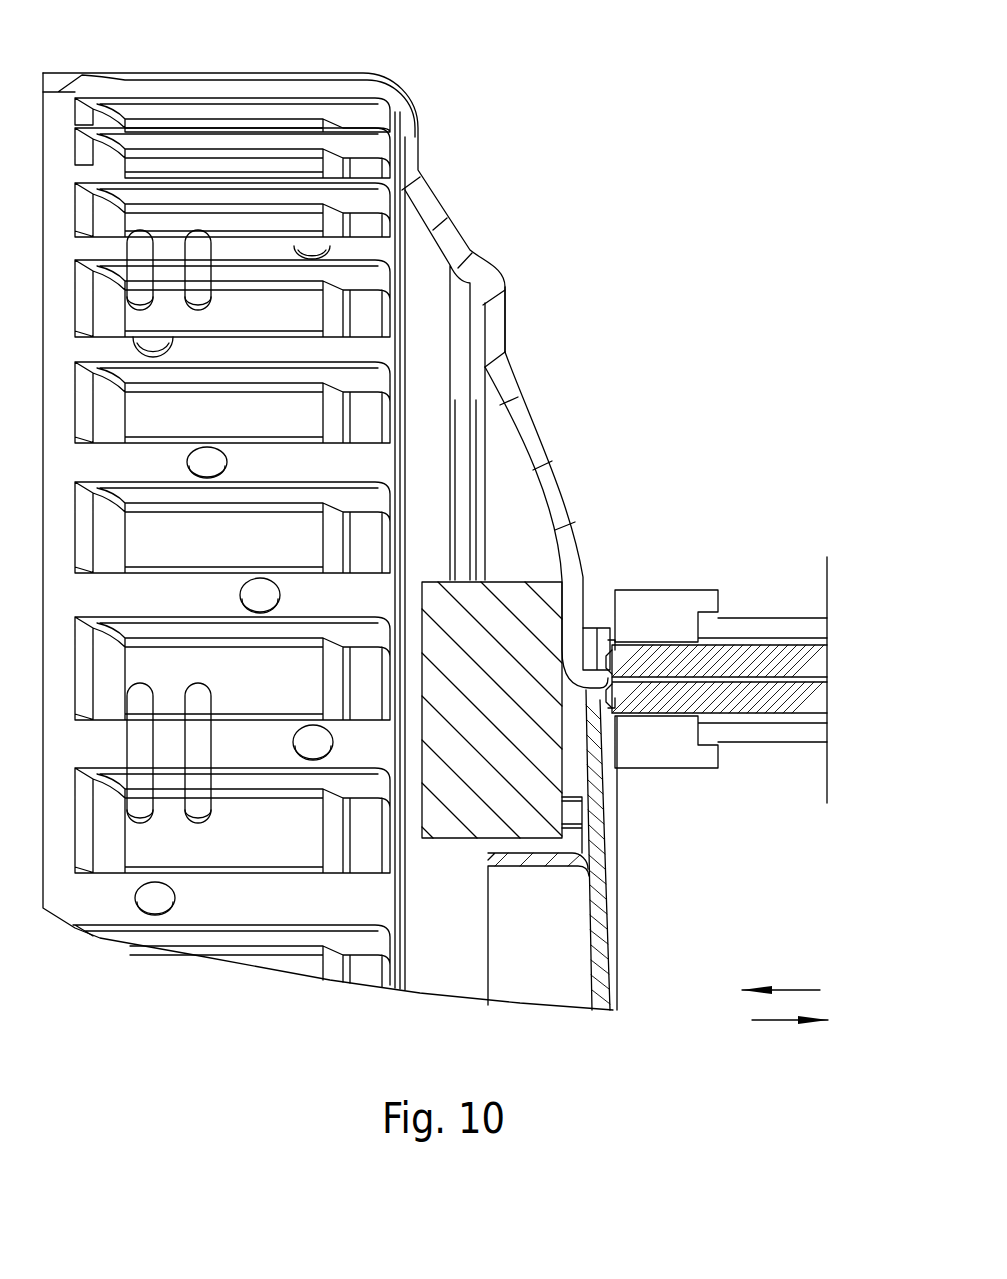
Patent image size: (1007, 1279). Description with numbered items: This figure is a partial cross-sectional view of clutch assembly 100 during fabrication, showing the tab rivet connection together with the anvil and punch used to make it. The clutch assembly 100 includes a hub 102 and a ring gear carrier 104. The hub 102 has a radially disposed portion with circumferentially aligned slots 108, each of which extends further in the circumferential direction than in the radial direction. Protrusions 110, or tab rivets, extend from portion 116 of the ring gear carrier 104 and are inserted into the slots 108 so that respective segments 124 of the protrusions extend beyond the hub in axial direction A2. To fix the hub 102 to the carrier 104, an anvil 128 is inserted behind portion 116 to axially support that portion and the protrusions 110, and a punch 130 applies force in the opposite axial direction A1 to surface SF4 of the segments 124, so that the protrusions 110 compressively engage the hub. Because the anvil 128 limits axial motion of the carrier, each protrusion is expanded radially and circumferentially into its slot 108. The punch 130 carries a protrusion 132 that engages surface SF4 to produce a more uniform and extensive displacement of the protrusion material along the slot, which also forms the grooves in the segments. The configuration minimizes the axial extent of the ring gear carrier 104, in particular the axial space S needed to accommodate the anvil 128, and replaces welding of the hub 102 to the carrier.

The clutch assembly 100 is at (660, 64).
The hub 102 is at (625, 844).
The ring gear carrier 104 is at (465, 222).
The slots 108 is at (590, 628).
The protrusions 110 is at (593, 683).
The portion 116 is at (592, 660).
The segment 124 is at (615, 640).
The anvil 128 is at (502, 580).
The punch 130 is at (745, 553).
The protrusion 132 is at (615, 683).
The space S is at (500, 467).
The surface SF4 is at (615, 680).
The axial direction A1 is at (792, 990).
The axial direction A2 is at (778, 1020).